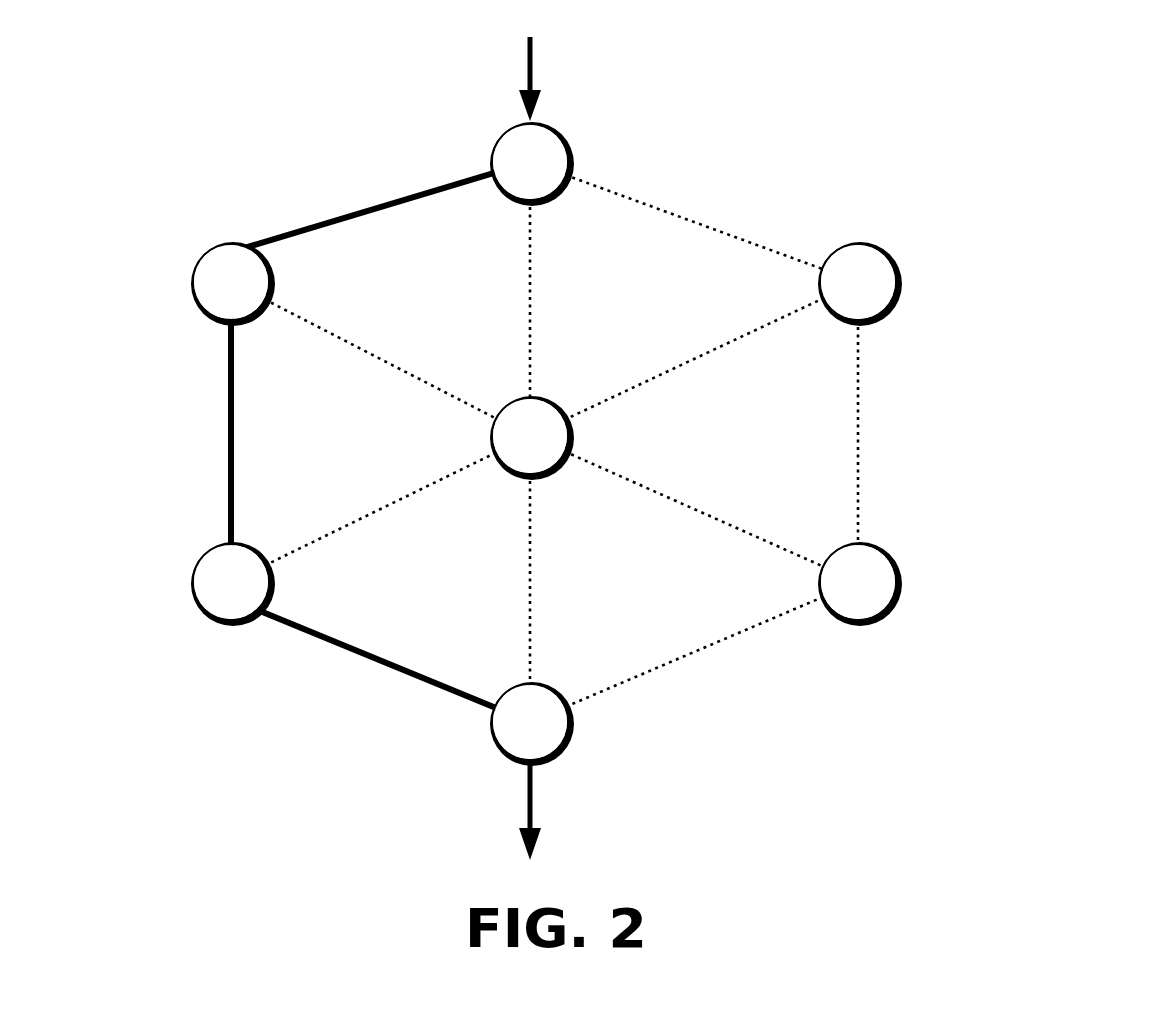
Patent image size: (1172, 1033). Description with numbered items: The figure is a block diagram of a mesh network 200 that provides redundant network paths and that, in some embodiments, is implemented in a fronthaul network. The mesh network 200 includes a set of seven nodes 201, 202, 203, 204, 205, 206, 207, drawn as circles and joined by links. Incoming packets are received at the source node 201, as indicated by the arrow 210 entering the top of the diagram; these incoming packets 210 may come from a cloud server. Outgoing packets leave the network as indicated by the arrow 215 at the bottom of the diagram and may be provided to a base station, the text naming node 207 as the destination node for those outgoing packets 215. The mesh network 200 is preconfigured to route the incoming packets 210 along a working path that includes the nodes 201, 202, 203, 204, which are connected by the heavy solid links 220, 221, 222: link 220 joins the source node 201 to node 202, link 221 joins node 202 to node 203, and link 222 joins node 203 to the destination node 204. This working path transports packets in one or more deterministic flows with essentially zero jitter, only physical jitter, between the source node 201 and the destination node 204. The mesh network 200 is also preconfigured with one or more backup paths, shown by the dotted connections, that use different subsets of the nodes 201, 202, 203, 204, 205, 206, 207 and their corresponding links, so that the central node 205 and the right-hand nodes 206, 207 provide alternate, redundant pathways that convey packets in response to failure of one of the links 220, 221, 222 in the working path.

The mesh network 200 is at (1056, 91).
The source node 201 is at (546, 170).
The node 202 is at (247, 290).
The node 203 is at (247, 590).
The destination node 204 is at (546, 730).
The node 205 is at (546, 444).
The node 206 is at (874, 290).
The node 207 is at (874, 590).
The incoming packets arrow 210 is at (522, 80).
The outgoing packets arrow 215 is at (537, 777).
The link 220 is at (333, 222).
The link 221 is at (227, 422).
The link 222 is at (395, 668).